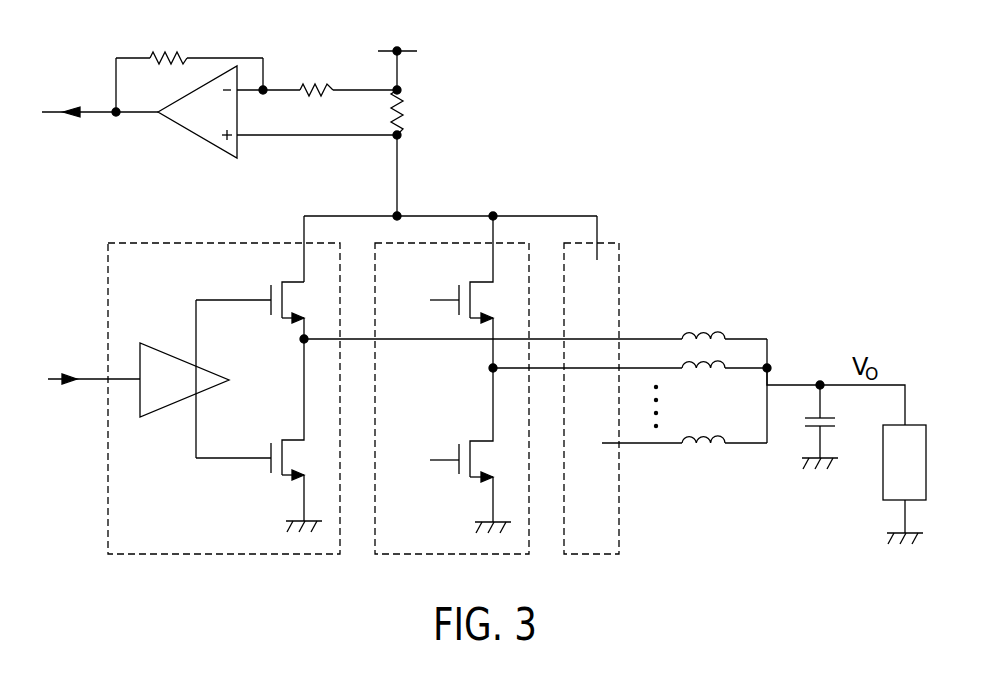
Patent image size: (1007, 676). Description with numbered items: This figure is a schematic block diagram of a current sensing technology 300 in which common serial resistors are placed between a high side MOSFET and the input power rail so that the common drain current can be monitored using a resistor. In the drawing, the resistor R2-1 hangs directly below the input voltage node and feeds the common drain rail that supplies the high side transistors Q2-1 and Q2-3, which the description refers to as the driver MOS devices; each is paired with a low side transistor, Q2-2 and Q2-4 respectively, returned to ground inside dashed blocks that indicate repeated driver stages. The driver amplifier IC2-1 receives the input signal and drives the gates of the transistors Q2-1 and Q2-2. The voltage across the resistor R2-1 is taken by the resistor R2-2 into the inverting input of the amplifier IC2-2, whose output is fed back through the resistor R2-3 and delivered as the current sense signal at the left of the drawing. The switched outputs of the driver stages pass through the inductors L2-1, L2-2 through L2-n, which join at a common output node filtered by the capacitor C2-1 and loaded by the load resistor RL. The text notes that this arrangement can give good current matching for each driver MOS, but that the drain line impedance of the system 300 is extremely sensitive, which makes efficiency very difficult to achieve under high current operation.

The current sensing technology 300 is at (730, 154).
The operational amplifier IC2-2 is at (139, 129).
The feedback resistor R2-3 is at (191, 66).
The input resistor R2-2 is at (319, 111).
The resistor R2-1 is at (422, 124).
The driver amplifier IC2-1 is at (138, 379).
The transistor Q2-1 is at (252, 315).
The transistor Q2-2 is at (259, 435).
The transistor Q2-3 is at (452, 294).
The transistor Q2-4 is at (459, 450).
The inductor L2-1 is at (535, 328).
The inductor L2-2 is at (632, 385).
The inductor L2-n is at (684, 426).
The output capacitor C2-1 is at (820, 446).
The load resistor RL is at (904, 484).